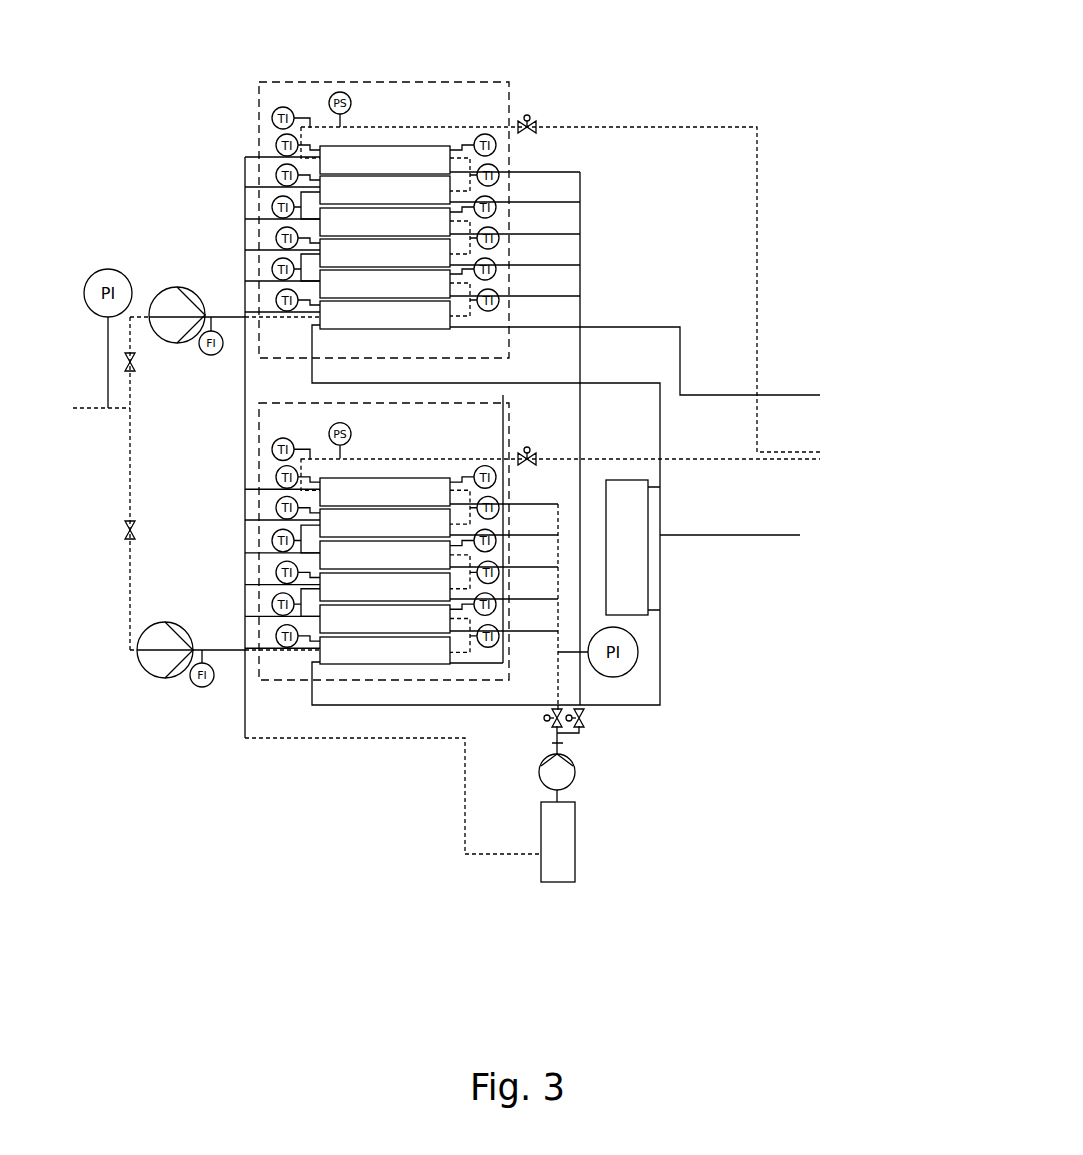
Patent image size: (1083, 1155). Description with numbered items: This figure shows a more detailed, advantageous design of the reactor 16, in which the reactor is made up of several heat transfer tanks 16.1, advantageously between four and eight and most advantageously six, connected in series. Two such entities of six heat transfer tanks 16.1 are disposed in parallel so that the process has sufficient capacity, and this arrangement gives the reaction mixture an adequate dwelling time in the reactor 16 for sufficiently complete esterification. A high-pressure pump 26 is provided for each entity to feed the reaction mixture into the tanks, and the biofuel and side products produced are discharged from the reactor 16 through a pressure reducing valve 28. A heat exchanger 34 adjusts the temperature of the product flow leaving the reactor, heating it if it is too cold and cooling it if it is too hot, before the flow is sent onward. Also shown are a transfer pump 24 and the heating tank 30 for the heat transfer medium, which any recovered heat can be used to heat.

The reactor 16 is at (258, 135).
The heat transfer tank 16.1 is at (402, 158).
The transfer pump 24 is at (577, 775).
The high-pressure pump 26 is at (167, 343).
The pressure reducing valve 28 is at (527, 115).
The heating tank for the heat transfer medium 30 is at (557, 842).
The heat exchanger 34 is at (627, 570).